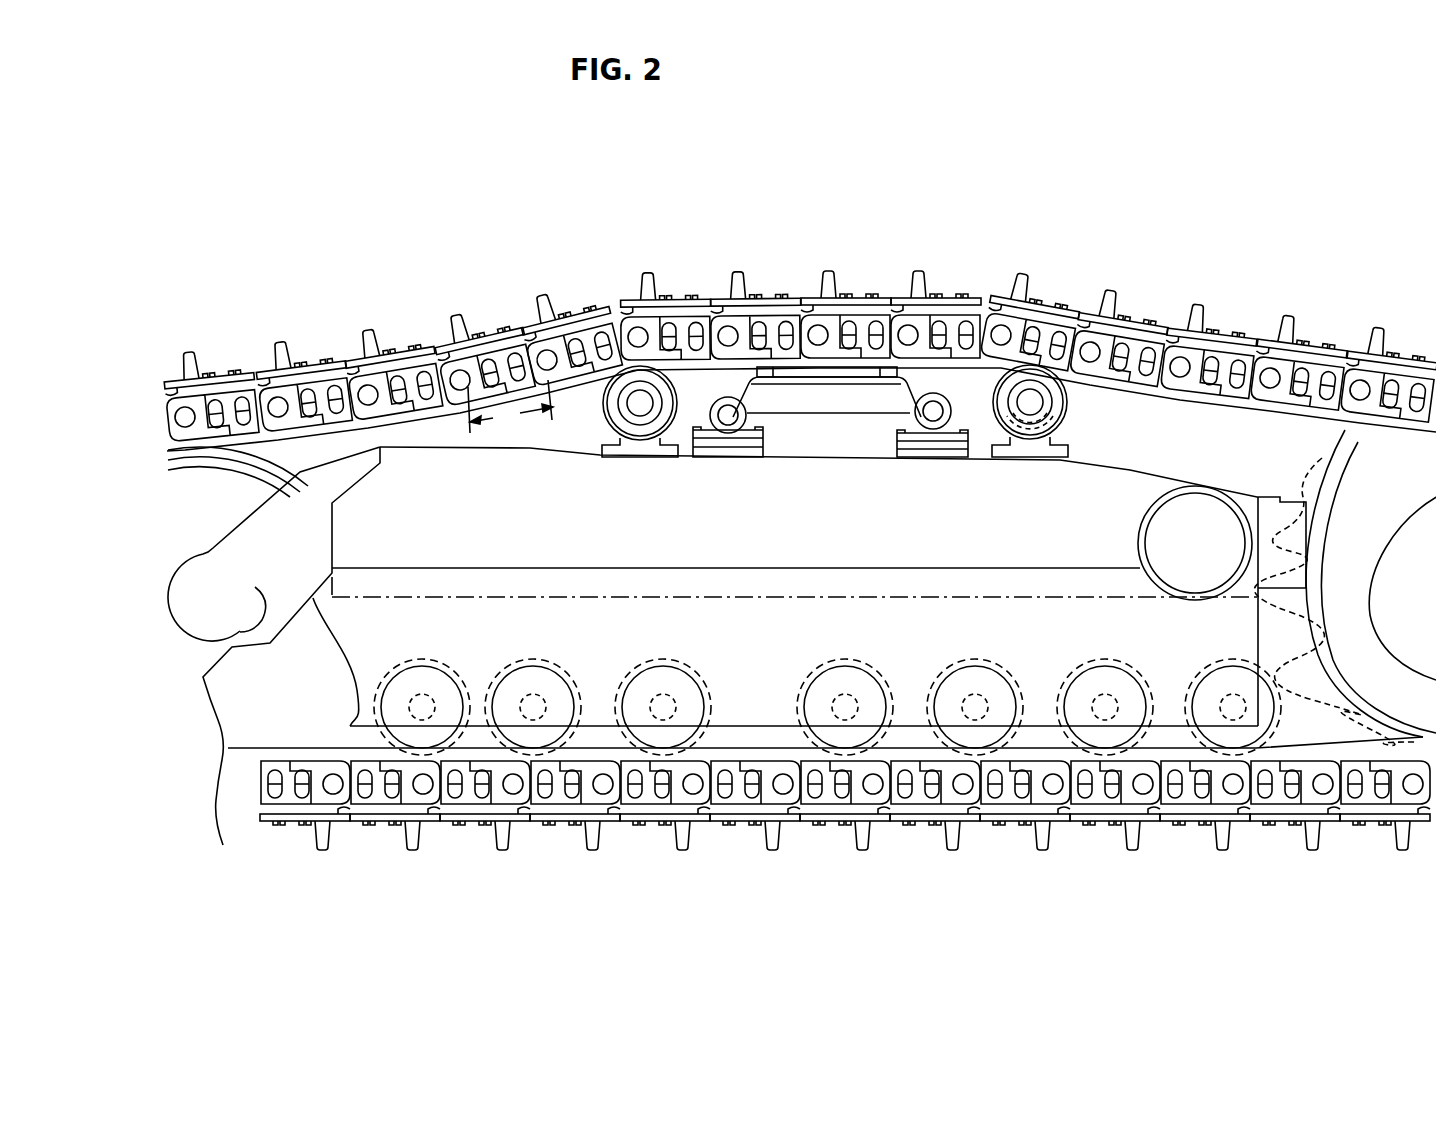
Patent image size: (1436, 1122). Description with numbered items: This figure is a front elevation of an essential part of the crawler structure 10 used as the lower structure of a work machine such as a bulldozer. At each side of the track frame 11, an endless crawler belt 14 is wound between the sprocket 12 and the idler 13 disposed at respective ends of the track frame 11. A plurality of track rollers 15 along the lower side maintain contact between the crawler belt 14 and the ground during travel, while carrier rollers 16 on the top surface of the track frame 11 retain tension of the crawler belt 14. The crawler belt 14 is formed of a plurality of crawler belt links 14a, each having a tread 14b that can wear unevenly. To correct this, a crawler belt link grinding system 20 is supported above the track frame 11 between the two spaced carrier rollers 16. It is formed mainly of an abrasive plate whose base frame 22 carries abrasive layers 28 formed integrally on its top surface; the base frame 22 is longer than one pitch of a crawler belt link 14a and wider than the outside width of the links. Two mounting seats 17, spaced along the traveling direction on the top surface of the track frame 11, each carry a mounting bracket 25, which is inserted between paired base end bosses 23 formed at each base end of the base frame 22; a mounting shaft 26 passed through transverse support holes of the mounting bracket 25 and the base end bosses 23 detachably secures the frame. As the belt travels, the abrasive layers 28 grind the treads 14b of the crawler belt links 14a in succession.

The crawler structure 10 is at (466, 301).
The track frame 11 is at (562, 475).
The sprocket 12 is at (1362, 514).
The idler 13 is at (230, 478).
The crawler belt 14 is at (1200, 322).
The crawler belt link 14a is at (866, 327).
The tread 14b is at (1121, 393).
The track roller 15 is at (848, 735).
The carrier roller 16 is at (651, 377).
The mounting seat 17 is at (750, 452).
The crawler belt link grinding system 20 is at (799, 367).
The base frame 22 is at (826, 398).
The base end boss 23 is at (941, 409).
The mounting bracket 25 is at (715, 438).
The mounting shaft 26 is at (728, 416).
The abrasive layer 28 is at (781, 368).